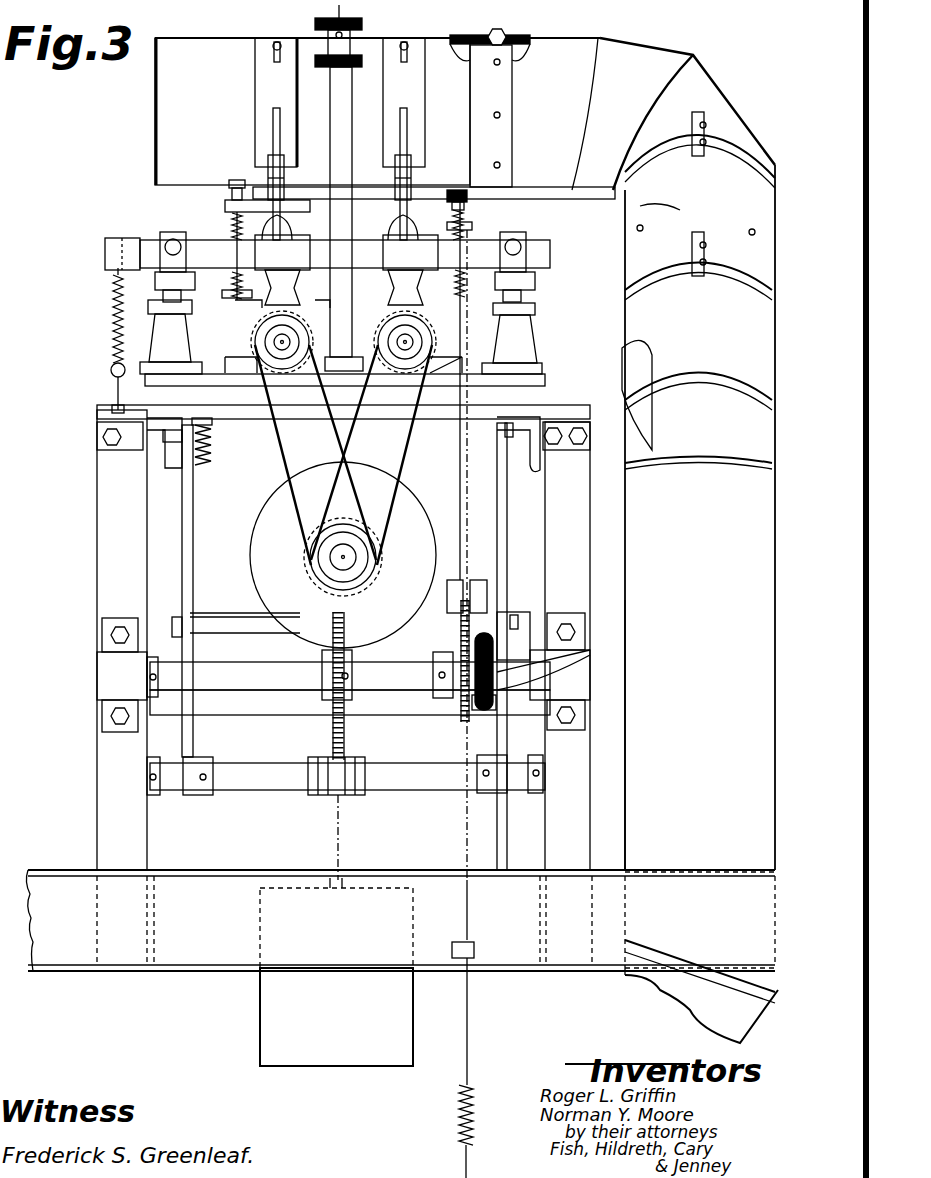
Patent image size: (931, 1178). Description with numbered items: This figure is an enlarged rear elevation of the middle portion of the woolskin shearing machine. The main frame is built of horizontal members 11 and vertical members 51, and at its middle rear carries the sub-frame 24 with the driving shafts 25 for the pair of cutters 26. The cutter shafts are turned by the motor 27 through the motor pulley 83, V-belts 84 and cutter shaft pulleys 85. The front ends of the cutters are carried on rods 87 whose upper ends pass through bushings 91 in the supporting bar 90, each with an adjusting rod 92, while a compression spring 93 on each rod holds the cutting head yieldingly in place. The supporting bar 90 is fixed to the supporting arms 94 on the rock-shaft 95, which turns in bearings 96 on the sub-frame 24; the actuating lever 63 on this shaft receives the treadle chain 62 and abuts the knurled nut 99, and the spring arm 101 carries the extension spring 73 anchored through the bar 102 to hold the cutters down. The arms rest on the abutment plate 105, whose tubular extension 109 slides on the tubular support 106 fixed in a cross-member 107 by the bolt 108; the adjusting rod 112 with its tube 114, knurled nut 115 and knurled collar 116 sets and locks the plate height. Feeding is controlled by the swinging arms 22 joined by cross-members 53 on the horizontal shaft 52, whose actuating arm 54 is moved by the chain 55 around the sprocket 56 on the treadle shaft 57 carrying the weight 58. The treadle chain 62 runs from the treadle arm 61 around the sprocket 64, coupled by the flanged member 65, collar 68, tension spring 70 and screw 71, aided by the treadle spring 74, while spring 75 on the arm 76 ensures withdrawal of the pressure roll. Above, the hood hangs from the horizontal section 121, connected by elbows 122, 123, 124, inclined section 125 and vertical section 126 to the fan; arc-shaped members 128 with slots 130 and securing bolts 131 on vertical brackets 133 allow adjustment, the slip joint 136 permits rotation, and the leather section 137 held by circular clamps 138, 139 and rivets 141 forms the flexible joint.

The horizontal member 11 is at (45, 885).
The swinging arm 22 is at (187, 525).
The sub-frame 24 is at (545, 381).
The driving shaft 25 is at (282, 342).
The cutter 26 is at (270, 288).
The motor 27 is at (412, 507).
The vertical member 51 is at (105, 492).
The horizontal shaft 52 is at (272, 781).
The cross-member 53 is at (210, 620).
The actuating arm 54 is at (353, 796).
The chain 55 is at (333, 727).
The sprocket 56 is at (340, 700).
The treadle shaft 57 is at (238, 683).
The weight 58 is at (282, 1012).
The treadle arm 61 is at (470, 1175).
The treadle chain 62 is at (467, 525).
The actuating lever 63 is at (470, 222).
The sprocket 64 is at (460, 636).
The flanged member 65 is at (445, 700).
The collar 68 is at (497, 660).
The tension spring 70 is at (533, 696).
The screw 71 is at (485, 710).
The extension spring 73 is at (112, 305).
The treadle spring 74 is at (475, 1124).
The spring 75 is at (213, 447).
The arm 76 is at (170, 440).
The motor pulley 83 is at (370, 578).
The V-belt 84 is at (282, 457).
The cutter shaft pulley 85 is at (256, 330).
The rod 87 is at (237, 270).
The supporting bar 90 is at (235, 222).
The bushing 91 is at (228, 206).
The adjusting rod 92 is at (230, 186).
The compression spring 93 is at (237, 292).
The supporting arm 94 is at (400, 218).
The rock-shaft 95 is at (200, 248).
The bearing 96 is at (168, 280).
The knurled nut 99 is at (504, 187).
The spring arm 101 is at (118, 249).
The bar 102 is at (93, 388).
The abutment plate 105 is at (300, 248).
The tubular support 106 is at (345, 403).
The cross-member 107 is at (335, 442).
The bolt 108 is at (343, 443).
The tubular extension 109 is at (330, 372).
The adjusting rod 112 is at (351, 50).
The tube 114 is at (331, 150).
The knurled nut 115 is at (297, 70).
The knurled collar 116 is at (328, 40).
The horizontal section 121 is at (165, 115).
The elbow 122 is at (700, 85).
The elbow 123 is at (640, 415).
The elbow 124 is at (700, 1010).
The inclined section 125 is at (624, 341).
The vertical section 126 is at (624, 821).
The arc-shaped member 128 is at (258, 48).
The slot 130 is at (275, 60).
The securing bolt 131 is at (278, 42).
The vertical bracket 133 is at (270, 133).
The slip joint 136 is at (500, 35).
The leather section 137 is at (650, 212).
The circular clamp 138 is at (705, 120).
The circular clamp 139 is at (697, 240).
The rivet 141 is at (752, 236).